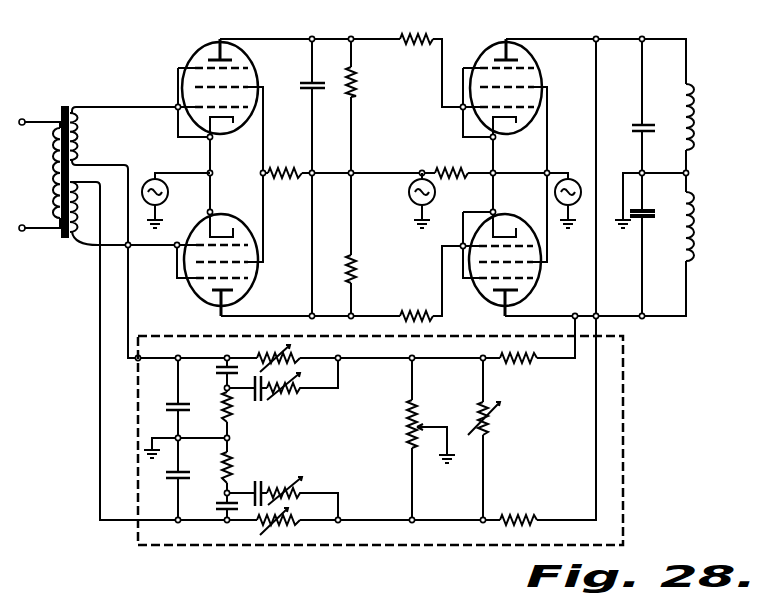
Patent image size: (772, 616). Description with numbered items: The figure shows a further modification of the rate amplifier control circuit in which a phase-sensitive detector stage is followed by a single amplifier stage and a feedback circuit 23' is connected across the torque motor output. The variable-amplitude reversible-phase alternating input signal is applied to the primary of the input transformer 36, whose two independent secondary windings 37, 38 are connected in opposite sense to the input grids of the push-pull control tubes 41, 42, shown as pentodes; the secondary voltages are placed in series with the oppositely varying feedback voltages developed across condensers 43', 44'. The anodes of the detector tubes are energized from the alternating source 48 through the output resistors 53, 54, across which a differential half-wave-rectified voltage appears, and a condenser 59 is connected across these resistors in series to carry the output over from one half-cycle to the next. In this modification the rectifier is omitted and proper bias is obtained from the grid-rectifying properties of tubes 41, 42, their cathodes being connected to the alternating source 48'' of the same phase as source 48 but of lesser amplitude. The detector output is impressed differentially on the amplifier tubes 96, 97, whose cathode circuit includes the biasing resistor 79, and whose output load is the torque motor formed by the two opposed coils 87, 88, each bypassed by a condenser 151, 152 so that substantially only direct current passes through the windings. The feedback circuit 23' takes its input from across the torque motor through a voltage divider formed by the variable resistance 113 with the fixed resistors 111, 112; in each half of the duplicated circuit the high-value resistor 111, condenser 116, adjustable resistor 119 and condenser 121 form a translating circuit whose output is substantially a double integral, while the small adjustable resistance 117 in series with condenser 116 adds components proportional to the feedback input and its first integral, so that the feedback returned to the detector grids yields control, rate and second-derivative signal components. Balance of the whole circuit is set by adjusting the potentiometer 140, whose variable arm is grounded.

The input transformer 36 is at (65, 107).
The secondary winding 37 is at (86, 134).
The secondary winding 38 is at (96, 245).
The control tube 41 is at (214, 43).
The control tube 42 is at (257, 292).
The source 48 is at (437, 200).
The A. C. source 48'' is at (368, 185).
The output resistor 53 is at (357, 82).
The output resistor 54 is at (357, 266).
The condenser 59 is at (322, 84).
The cathode biasing resistor 79 is at (455, 172).
The torque motor coil 87 is at (698, 98).
The torque motor coil 88 is at (698, 210).
The amplifier tube 96 is at (542, 68).
The amplifier tube 97 is at (541, 290).
The bypass condenser 151 is at (636, 124).
The bypass condenser 152 is at (645, 218).
The feedback circuit 23' is at (401, 440).
The condenser 43' is at (170, 392).
The condenser 44' is at (166, 492).
The condenser 121 is at (218, 368).
The condenser 116 is at (255, 404).
The adjustable resistance 117 is at (297, 395).
The resistor 119 is at (296, 356).
The potentiometer 140 is at (406, 427).
The variable resistance 113 is at (490, 430).
The resistor 111 is at (530, 366).
The resistor 112 is at (532, 516).